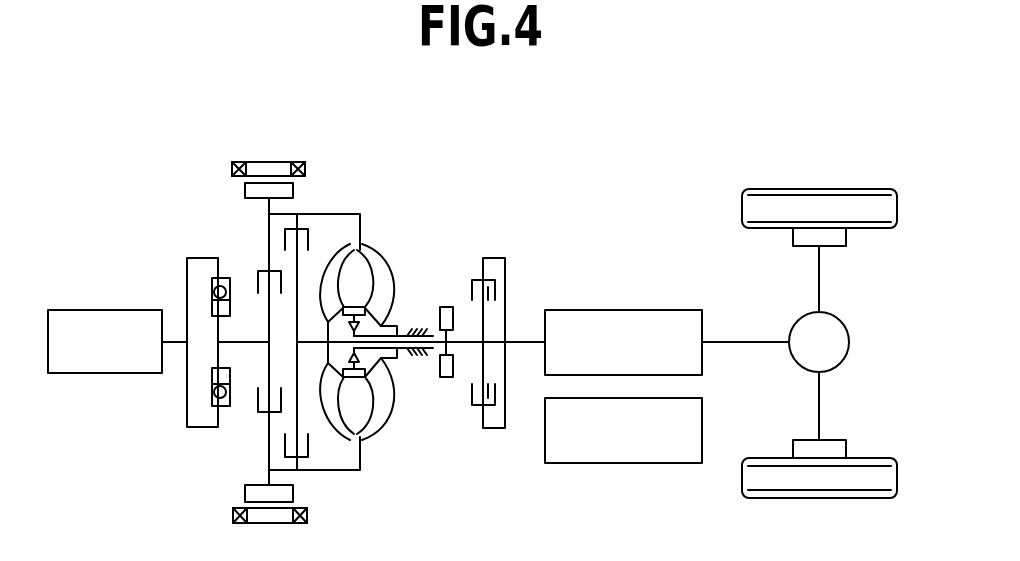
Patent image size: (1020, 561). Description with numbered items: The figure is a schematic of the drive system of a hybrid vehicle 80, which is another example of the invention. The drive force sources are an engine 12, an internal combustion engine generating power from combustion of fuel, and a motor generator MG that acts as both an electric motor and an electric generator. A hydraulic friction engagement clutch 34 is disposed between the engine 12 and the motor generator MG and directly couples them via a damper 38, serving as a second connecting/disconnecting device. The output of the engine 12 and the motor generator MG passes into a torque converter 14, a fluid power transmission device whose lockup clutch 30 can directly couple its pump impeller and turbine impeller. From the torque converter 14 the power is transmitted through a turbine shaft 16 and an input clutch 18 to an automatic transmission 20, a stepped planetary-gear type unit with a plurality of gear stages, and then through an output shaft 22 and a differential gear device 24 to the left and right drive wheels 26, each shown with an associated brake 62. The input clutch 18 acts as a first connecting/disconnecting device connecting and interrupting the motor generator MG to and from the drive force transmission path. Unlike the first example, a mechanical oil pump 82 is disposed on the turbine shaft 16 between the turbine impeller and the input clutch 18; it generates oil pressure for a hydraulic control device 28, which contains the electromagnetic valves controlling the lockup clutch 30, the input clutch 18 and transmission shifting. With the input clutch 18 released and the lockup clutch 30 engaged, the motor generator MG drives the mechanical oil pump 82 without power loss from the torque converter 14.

The engine 12 is at (97, 311).
The torque converter 14 is at (406, 196).
The turbine shaft 16 is at (413, 355).
The C1 clutch 18 is at (471, 290).
The automatic transmission 20 is at (645, 312).
The output shaft 22 is at (748, 344).
The differential gear device 24 is at (828, 327).
The drive wheels 26 is at (832, 203).
The hydraulic control device 28 is at (623, 457).
The lockup clutch 30 is at (308, 238).
The K0 clutch 34 is at (255, 283).
The damper 38 is at (217, 389).
The wheel brakes 62 is at (807, 238).
The hybrid vehicle 80 is at (731, 140).
The mechanical oil pump 82 is at (448, 378).
The motor generator MG is at (248, 148).